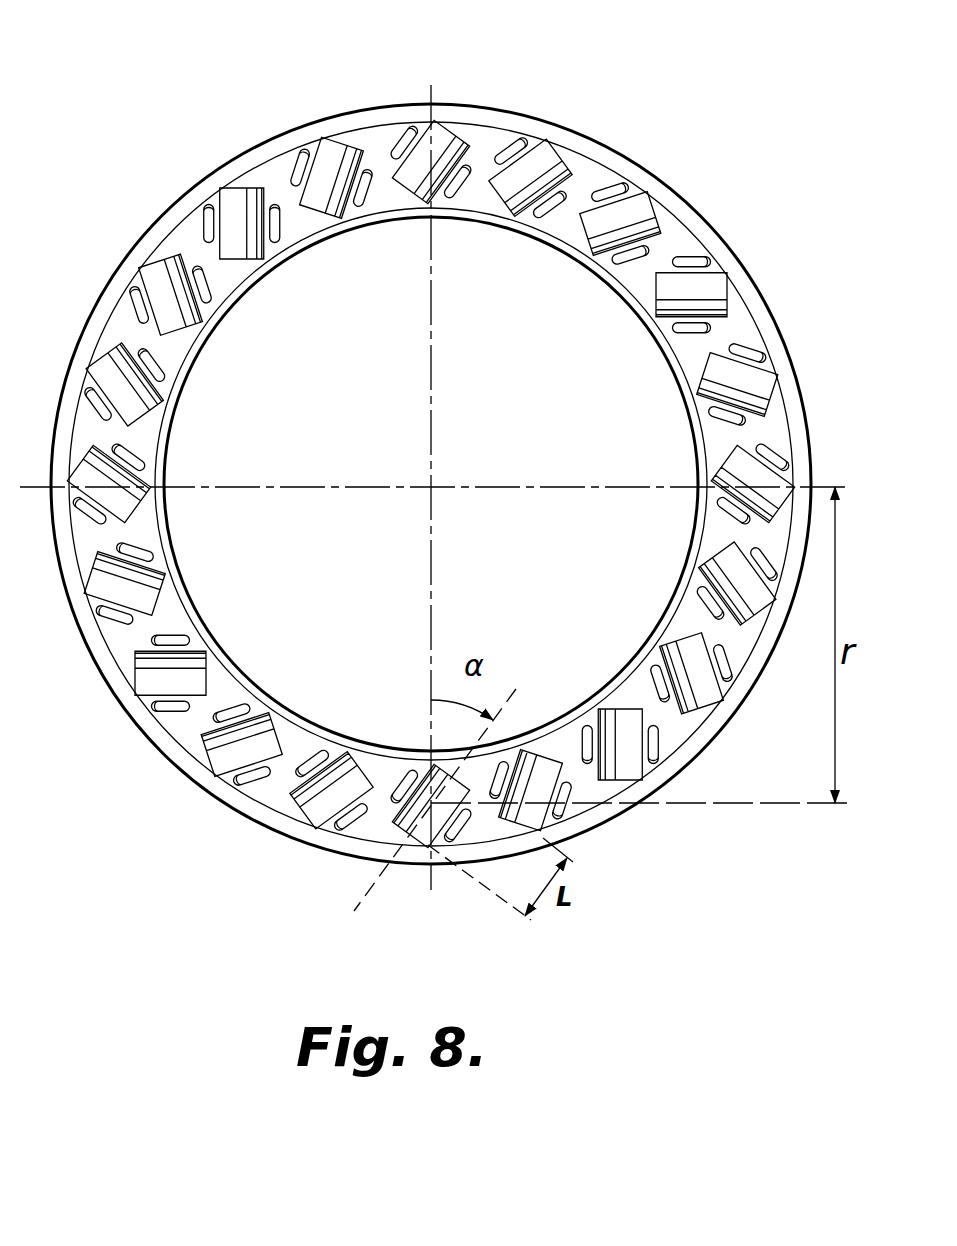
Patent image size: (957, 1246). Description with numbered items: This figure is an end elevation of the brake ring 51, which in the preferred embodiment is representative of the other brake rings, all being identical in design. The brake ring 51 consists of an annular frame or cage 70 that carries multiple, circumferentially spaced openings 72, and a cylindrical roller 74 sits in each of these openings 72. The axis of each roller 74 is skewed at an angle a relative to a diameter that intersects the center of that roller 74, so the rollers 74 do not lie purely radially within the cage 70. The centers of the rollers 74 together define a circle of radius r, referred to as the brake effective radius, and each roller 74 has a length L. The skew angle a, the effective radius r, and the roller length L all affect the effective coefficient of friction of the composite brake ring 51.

The brake ring 51 is at (345, 108).
The annular frame or cage 70 is at (193, 237).
The openings 72 is at (627, 192).
The cylindrical rollers 74 is at (163, 676).